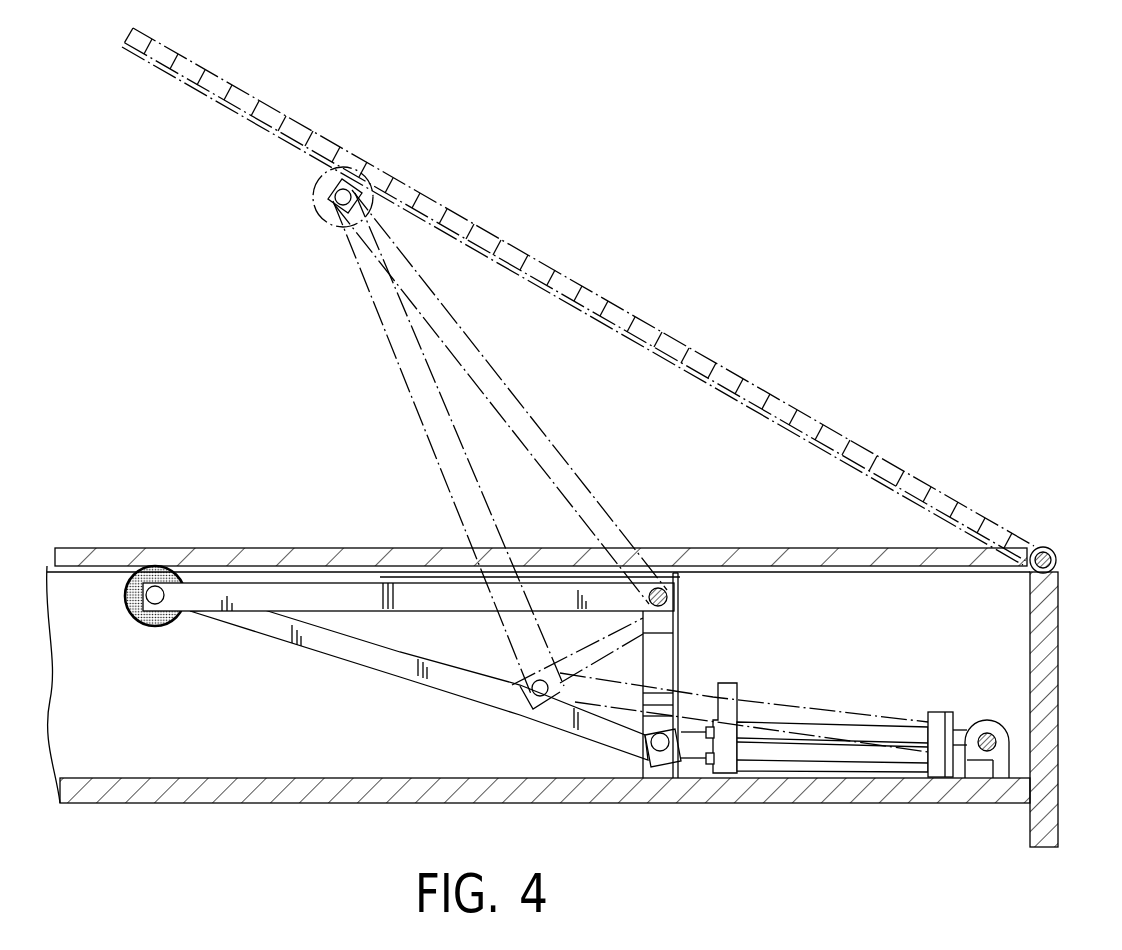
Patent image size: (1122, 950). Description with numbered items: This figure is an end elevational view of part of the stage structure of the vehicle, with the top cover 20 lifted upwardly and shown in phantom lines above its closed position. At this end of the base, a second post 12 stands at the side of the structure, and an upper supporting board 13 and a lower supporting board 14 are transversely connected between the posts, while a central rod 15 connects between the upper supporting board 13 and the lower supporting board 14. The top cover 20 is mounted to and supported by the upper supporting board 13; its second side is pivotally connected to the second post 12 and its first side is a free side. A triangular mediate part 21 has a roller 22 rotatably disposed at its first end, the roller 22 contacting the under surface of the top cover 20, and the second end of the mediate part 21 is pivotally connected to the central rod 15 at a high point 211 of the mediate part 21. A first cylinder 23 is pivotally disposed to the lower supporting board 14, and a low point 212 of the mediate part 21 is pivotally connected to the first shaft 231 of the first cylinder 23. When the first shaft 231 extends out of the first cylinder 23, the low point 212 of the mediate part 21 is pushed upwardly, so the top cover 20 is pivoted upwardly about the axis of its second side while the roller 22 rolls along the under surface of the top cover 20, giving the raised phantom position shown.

The second post 12 is at (1052, 688).
The upper supporting board 13 is at (928, 574).
The lower supporting board 14 is at (373, 787).
The central rod 15 is at (681, 668).
The top cover 20 is at (648, 333).
The triangular mediate part 21 is at (291, 657).
The roller 22 is at (136, 607).
The first cylinder 23 is at (938, 733).
The high point 211 is at (661, 590).
The low point 212 is at (648, 760).
The first shaft 231 is at (700, 745).